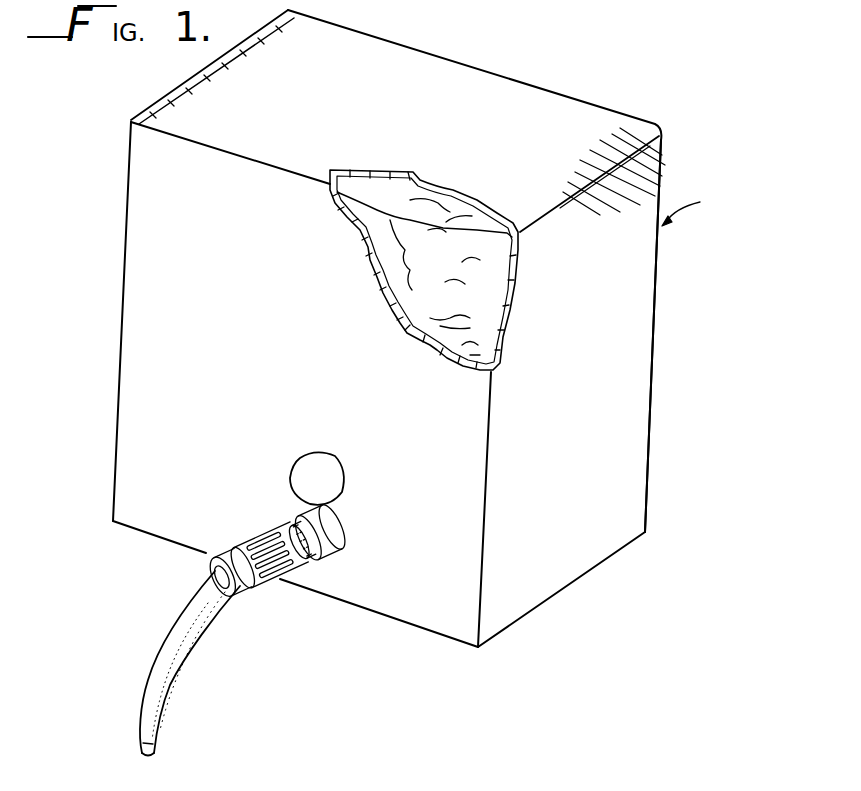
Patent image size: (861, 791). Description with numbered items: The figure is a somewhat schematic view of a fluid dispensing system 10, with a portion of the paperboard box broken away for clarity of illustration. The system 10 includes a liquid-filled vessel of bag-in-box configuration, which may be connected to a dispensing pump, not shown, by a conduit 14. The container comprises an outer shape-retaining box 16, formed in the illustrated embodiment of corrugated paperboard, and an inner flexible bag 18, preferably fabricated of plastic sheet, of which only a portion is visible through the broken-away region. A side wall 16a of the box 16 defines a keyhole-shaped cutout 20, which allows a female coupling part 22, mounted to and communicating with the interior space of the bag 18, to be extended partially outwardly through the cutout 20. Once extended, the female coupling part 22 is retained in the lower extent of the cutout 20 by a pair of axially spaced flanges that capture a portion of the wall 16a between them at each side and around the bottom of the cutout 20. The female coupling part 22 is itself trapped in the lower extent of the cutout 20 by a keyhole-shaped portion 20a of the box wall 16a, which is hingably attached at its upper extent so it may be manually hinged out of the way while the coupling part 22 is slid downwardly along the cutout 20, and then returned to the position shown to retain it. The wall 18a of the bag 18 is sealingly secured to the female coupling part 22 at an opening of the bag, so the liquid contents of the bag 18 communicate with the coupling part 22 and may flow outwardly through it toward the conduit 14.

The fluid dispensing system 10 is at (86, 168).
The conduit 14 is at (158, 707).
The outer shape-retaining box 16 is at (648, 387).
The side wall 16a is at (603, 490).
The inner flexible bag 18 is at (427, 190).
The wall of bag 18a is at (449, 258).
The keyhole-shaped cutout 20 is at (343, 487).
The keyhole-shaped portion 20a is at (316, 470).
The female coupling part 22 is at (322, 568).